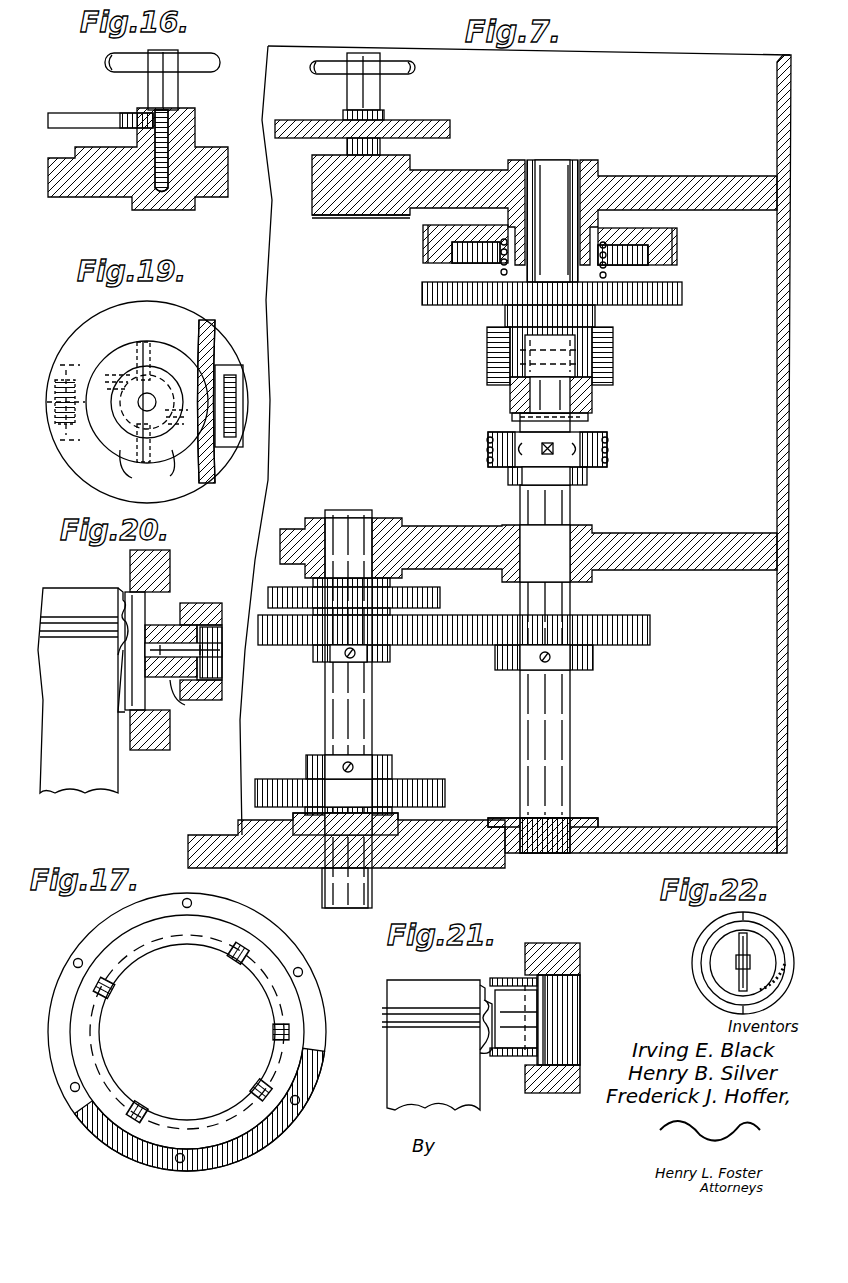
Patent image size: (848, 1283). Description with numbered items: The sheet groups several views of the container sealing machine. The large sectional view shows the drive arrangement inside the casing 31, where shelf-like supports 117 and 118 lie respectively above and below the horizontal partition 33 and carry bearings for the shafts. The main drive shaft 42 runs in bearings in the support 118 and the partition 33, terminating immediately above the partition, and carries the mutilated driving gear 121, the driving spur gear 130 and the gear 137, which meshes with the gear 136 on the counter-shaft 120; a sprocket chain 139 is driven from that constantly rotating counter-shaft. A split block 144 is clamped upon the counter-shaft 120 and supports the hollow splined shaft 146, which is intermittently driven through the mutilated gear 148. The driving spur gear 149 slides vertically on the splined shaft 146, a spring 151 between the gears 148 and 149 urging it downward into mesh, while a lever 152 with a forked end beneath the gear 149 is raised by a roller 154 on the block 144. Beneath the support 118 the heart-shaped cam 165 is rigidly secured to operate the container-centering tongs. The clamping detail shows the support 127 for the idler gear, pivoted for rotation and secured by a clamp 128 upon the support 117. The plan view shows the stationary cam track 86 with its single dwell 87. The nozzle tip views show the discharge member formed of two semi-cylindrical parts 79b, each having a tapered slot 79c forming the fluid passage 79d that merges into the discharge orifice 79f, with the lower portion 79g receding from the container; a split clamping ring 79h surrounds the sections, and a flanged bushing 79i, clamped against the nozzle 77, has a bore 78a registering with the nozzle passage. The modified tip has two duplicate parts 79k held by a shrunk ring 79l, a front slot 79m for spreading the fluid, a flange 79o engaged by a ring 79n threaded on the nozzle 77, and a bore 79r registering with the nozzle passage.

In FIG. 7, the casing 31 is at (779, 348).
In FIG. 7, the horizontal partition 33 is at (696, 556).
In FIG. 7, the main drive shaft 42 is at (350, 516).
In FIG. 20, the nozzle 77 is at (205, 608).
In FIG. 20, the bore of bushing 78a is at (215, 652).
In FIG. 19, the semi-cylindrical parts 79b is at (147, 471).
In FIG. 20, the semi-cylindrical parts 79b is at (146, 600).
In FIG. 22, the semi-cylindrical parts 79b is at (712, 990).
In FIG. 20, the tapered slot 79c is at (120, 592).
In FIG. 19, the fluid passage 79d is at (158, 392).
In FIG. 19, the discharge orifice 79f is at (170, 330).
In FIG. 20, the discharge orifice 79f is at (122, 685).
In FIG. 20, the lower portion of nozzle tip 79g is at (118, 715).
In FIG. 19, the split clamping ring 79h is at (92, 330).
In FIG. 20, the split clamping ring 79h is at (170, 568).
In FIG. 20, the bushing 79i is at (185, 705).
In FIG. 21, the duplicate parts of discharge member 79k is at (500, 987).
In FIG. 22, the duplicate parts of discharge member 79k is at (728, 940).
In FIG. 21, the shrunk ring 79l is at (515, 978).
In FIG. 22, the shrunk ring 79l is at (702, 967).
In FIG. 21, the slot 79m is at (492, 1048).
In FIG. 22, the slot 79m is at (736, 966).
In FIG. 21, the threaded ring 79n is at (578, 946).
In FIG. 21, the flange 79o is at (580, 975).
In FIG. 21, the bore 79r is at (545, 1012).
In FIG. 22, the bore 79r is at (750, 955).
In FIG. 17, the stationary cam track 86 is at (78, 950).
In FIG. 17, the dwell 87 is at (290, 1032).
In FIG. 7, the upper shelf-like support 117 is at (690, 186).
In FIG. 16, the upper shelf-like support 117 is at (80, 199).
In FIG. 7, the lower shelf-like support 118 is at (710, 833).
In FIG. 7, the counter-shaft 120 is at (573, 492).
In FIG. 7, the driving gear 121 is at (416, 780).
In FIG. 7, the support for idler gear 127 is at (450, 132).
In FIG. 16, the support for idler gear 127 is at (92, 118).
In FIG. 7, the clamp 128 is at (384, 110).
In FIG. 16, the clamp 128 is at (180, 110).
In FIG. 7, the driving spur gear 130 is at (442, 598).
In FIG. 7, the gear on counter-shaft 136 is at (651, 641).
In FIG. 7, the gear on main drive shaft 137 is at (426, 643).
In FIG. 7, the sprocket chain 139 is at (492, 454).
In FIG. 7, the split block 144 is at (596, 406).
In FIG. 7, the hollow splined shaft 146 is at (500, 265).
In FIG. 7, the gear on splined shaft 148 is at (424, 250).
In FIG. 7, the driving spur gear 149 is at (424, 300).
In FIG. 7, the spring 151 is at (601, 267).
In FIG. 7, the lever 152 is at (610, 365).
In FIG. 7, the roller 154 is at (514, 418).
In FIG. 7, the heart-shaped cam 165 is at (506, 862).